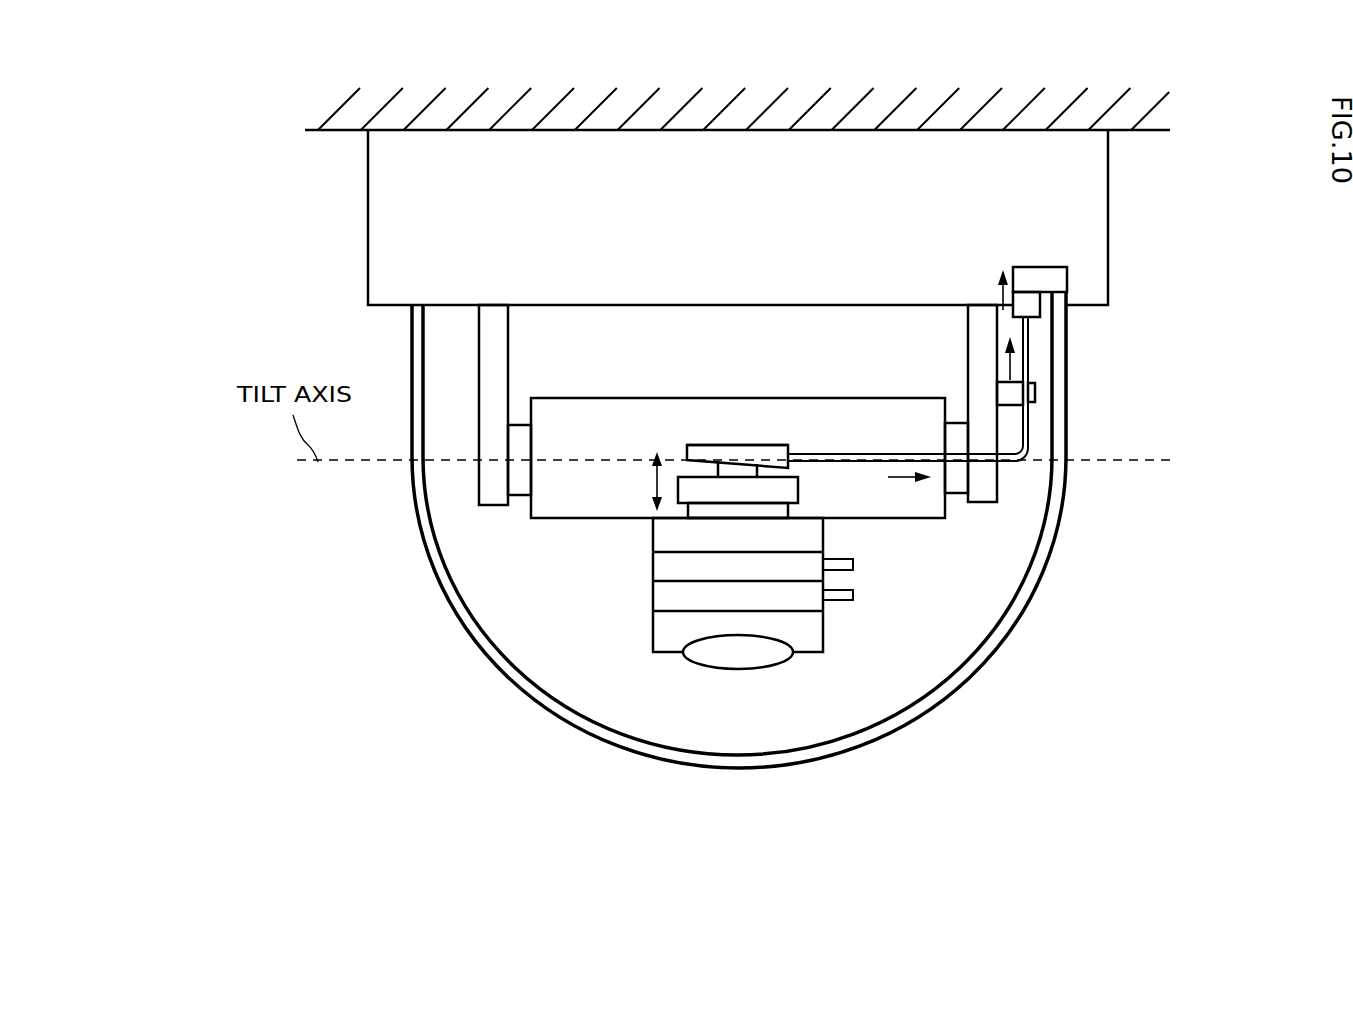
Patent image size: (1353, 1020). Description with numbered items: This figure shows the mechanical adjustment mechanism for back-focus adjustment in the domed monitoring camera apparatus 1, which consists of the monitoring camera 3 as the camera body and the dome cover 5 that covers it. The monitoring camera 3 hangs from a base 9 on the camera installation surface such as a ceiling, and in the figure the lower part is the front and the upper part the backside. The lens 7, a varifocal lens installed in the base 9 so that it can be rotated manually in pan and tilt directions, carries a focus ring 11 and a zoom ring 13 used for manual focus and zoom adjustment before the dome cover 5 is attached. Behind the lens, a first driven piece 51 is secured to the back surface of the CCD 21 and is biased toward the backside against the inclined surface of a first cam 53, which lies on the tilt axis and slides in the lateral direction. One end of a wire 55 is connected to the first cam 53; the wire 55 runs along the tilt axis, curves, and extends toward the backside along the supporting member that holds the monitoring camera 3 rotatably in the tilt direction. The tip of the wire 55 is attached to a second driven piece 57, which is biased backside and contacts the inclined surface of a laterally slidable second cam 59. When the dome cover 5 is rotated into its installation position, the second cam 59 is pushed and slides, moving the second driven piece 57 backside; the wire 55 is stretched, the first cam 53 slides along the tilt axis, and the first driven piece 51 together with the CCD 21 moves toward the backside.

The domed monitoring camera apparatus 1 is at (826, 554).
The monitoring camera 3 is at (540, 592).
The dome cover 5 is at (740, 768).
The lens 7 is at (753, 670).
The base 9 is at (729, 235).
The focus ring 11 is at (855, 595).
The zoom ring 13 is at (855, 563).
The CCD 21 is at (788, 490).
The first driven piece 51 is at (730, 470).
The first cam 53 is at (738, 450).
The wire 55 is at (845, 455).
The second driven piece 57 is at (1040, 311).
The second cam 59 is at (1067, 278).